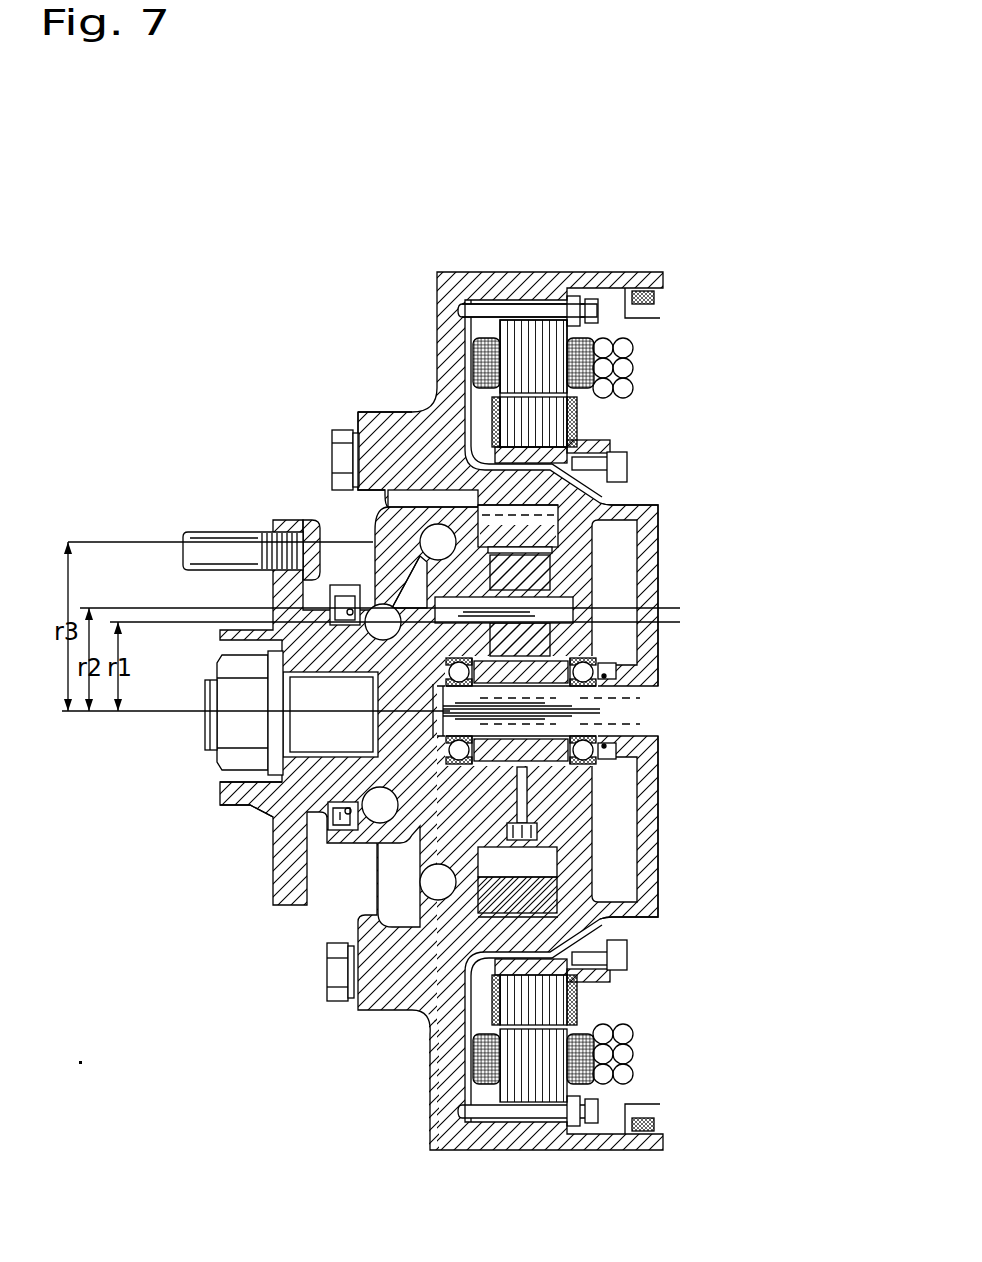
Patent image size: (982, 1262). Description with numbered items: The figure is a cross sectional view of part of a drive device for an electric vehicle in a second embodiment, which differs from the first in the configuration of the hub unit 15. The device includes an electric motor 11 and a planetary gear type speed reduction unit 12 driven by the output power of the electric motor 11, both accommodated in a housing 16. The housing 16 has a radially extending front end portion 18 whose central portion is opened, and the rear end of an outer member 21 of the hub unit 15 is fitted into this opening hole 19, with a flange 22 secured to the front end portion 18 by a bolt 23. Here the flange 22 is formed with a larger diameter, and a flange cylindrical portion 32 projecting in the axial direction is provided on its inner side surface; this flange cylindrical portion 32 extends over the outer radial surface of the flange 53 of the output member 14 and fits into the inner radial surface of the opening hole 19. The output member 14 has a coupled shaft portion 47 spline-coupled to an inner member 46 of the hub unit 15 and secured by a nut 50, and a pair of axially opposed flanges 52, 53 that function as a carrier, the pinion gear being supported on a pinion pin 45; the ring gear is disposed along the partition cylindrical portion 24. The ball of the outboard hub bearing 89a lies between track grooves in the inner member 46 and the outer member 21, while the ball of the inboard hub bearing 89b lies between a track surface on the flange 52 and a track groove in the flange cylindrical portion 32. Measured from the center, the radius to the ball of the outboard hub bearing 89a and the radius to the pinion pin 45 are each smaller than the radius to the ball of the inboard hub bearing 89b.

The electric motor 11 is at (642, 362).
The speed reduction unit 12 is at (568, 557).
The output member 14 is at (352, 812).
The hub unit 15 is at (233, 806).
The housing 16 is at (513, 292).
The front end portion 18 is at (442, 314).
The opening hole 19 is at (420, 522).
The outer member 21 is at (363, 583).
The flange 22 is at (375, 423).
The bolt 23 is at (340, 428).
The partition cylindrical portion 24 is at (597, 503).
The flange cylindrical portion 32 is at (457, 512).
The pinion pin 45 is at (567, 612).
The inner member 46 is at (317, 778).
The coupled shaft portion 47 is at (310, 730).
The nut 50 is at (240, 693).
The flange 52 is at (426, 546).
The flange 53 is at (563, 583).
The hub bearing 89a is at (380, 824).
The hub bearing 89b is at (434, 534).